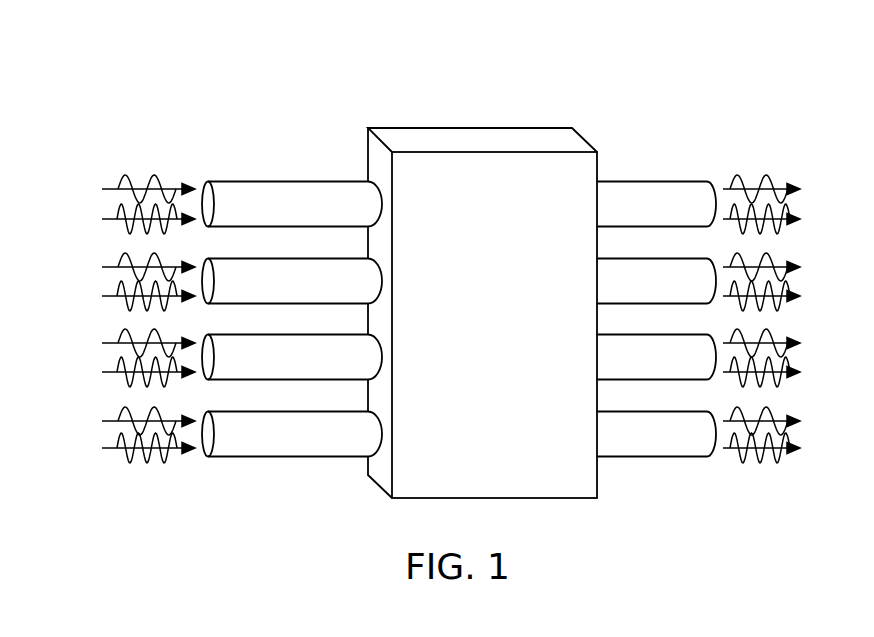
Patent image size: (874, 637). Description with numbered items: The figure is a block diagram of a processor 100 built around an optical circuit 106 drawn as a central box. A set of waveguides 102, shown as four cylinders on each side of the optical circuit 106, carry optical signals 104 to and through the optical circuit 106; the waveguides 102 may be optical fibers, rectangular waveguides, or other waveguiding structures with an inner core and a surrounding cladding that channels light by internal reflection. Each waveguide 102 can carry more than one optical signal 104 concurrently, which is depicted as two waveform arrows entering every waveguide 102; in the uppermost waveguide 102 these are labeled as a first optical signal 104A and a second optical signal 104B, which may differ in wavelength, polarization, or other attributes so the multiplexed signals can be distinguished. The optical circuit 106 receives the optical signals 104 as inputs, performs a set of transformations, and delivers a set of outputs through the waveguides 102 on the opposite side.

The processor 100 is at (488, 62).
The waveguide 102 is at (276, 215).
The optical signal 104 is at (113, 264).
The first optical signal 104A is at (113, 186).
The second optical signal 104B is at (113, 216).
The optical circuit 106 is at (476, 328).